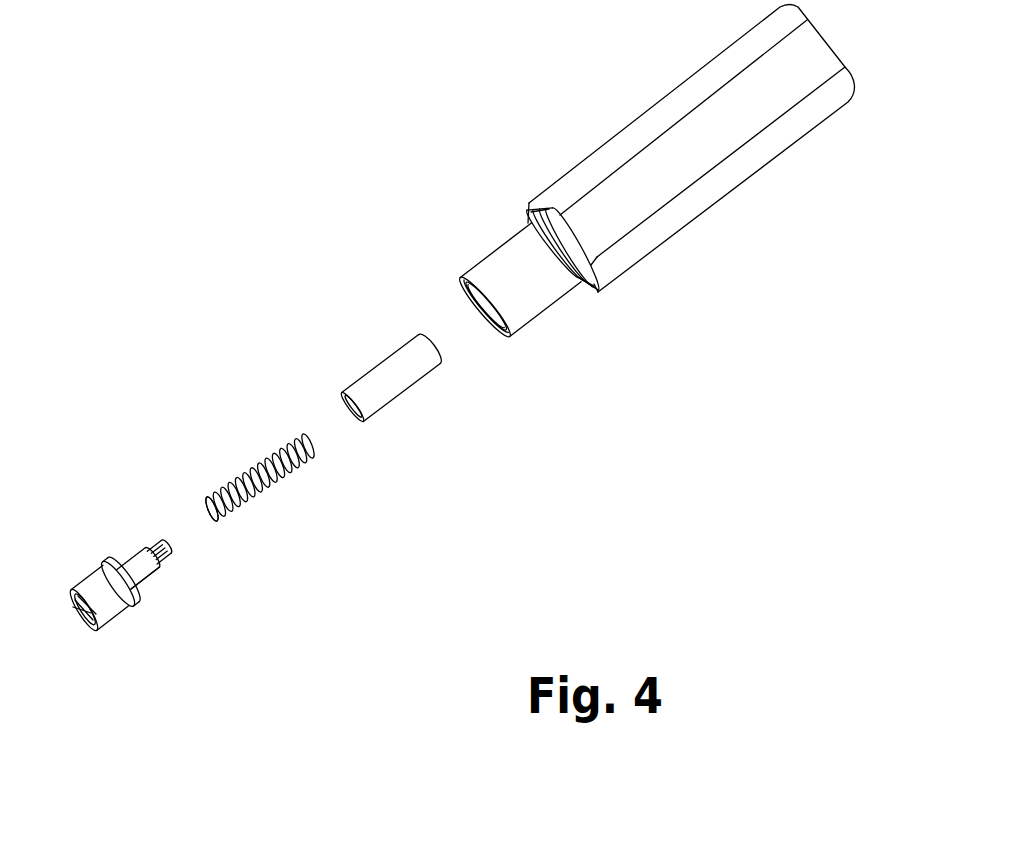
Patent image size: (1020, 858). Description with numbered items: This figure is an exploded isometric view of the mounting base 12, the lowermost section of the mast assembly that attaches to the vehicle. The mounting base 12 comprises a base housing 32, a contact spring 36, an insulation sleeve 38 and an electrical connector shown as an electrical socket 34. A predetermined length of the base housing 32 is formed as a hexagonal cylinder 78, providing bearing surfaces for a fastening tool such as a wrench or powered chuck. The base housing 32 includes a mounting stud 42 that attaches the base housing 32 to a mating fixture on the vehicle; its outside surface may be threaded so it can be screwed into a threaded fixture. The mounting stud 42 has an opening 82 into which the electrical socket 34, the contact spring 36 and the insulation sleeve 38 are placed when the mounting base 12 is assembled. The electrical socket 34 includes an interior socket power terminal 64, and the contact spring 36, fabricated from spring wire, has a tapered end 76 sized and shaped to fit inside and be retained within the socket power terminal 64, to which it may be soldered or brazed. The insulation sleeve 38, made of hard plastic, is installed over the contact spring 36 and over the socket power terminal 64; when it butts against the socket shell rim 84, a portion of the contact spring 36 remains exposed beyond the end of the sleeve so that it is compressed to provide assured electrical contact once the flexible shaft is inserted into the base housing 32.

The mounting base 12 is at (288, 164).
The hexagonal cylinder 78 is at (658, 186).
The base housing 32 is at (531, 211).
The mounting stud 42 is at (530, 305).
The opening 82 is at (475, 330).
The insulation sleeve 38 is at (382, 362).
The contact spring 36 is at (290, 475).
The tapered end 76 is at (220, 492).
The electrical socket 34 is at (105, 560).
The socket power terminal 64 is at (172, 548).
The socket shell rim 84 is at (172, 568).